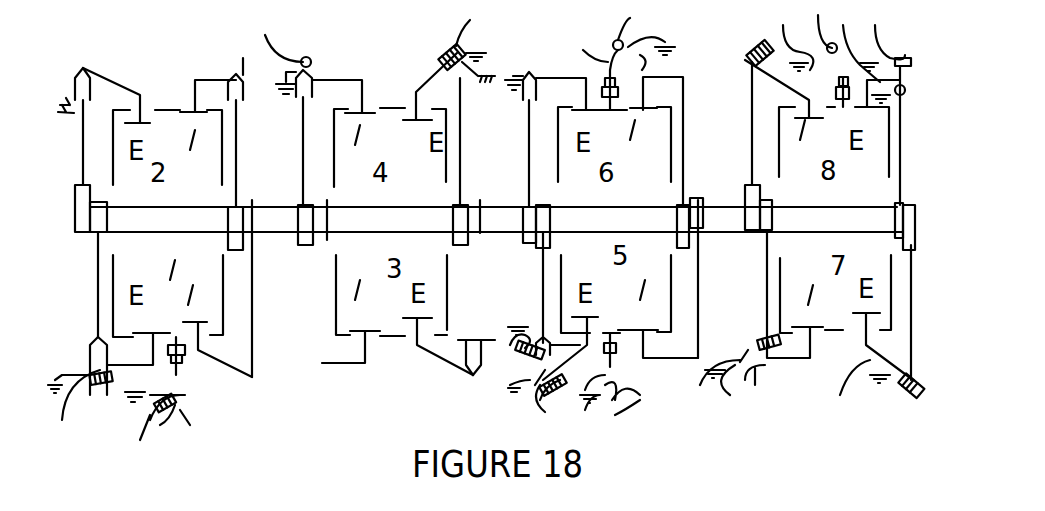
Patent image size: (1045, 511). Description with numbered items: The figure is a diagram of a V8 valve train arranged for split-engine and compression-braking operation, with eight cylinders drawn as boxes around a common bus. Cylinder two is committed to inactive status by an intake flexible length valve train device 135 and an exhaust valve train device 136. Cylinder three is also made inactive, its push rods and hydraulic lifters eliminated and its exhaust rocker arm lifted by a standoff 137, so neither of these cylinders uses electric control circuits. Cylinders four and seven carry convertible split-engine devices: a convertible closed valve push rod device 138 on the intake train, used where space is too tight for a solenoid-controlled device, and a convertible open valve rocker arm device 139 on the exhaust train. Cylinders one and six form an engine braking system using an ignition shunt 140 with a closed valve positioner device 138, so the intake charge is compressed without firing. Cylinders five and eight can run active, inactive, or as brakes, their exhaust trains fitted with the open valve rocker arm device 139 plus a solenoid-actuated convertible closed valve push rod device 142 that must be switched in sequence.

The intake flexible length valve train device 135 is at (213, 72).
The exhaust valve train device 136 is at (75, 72).
The standoff 137 is at (487, 340).
The convertible closed valve push rod device 138 is at (300, 59).
The convertible open valve rocker arm device 139 is at (436, 51).
The ignition shunt 140 is at (174, 399).
The convertible closed valve push rod device 142 is at (897, 190).